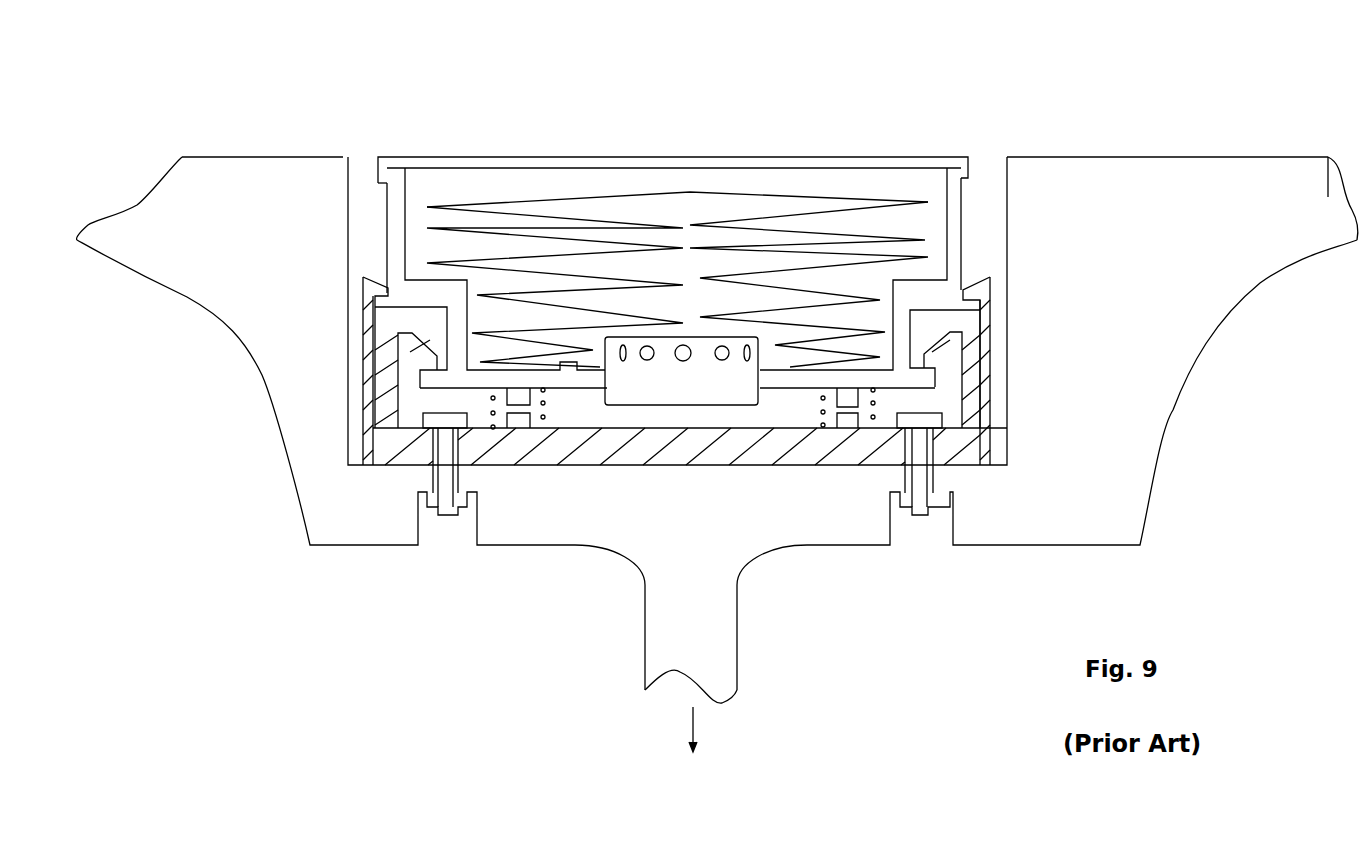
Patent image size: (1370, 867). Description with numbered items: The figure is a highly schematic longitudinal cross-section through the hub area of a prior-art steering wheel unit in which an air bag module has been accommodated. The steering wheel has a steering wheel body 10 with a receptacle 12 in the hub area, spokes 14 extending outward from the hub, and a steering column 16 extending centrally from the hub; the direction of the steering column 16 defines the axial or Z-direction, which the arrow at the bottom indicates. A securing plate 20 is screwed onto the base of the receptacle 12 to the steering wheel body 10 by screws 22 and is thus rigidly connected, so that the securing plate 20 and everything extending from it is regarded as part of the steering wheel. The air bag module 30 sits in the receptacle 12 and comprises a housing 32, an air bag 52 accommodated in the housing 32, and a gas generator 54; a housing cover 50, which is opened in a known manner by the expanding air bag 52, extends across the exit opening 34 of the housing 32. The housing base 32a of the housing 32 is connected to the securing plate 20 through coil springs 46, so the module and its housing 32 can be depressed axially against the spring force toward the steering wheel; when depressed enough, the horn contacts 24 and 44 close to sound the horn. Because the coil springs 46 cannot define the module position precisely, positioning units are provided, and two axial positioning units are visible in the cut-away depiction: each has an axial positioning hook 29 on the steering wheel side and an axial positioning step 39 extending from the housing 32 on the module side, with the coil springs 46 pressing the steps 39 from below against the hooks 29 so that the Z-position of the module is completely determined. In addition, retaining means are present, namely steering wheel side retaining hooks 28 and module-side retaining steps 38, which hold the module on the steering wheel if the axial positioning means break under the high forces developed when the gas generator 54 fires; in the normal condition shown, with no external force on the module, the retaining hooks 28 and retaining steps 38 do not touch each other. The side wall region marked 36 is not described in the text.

The steering wheel body 10 is at (1145, 378).
The receptacle 12 is at (988, 177).
The spokes 14 is at (128, 230).
The steering column 16 is at (713, 625).
The securing plate 20 is at (780, 450).
The screws 22 is at (448, 505).
The horn contact 24 is at (522, 420).
The retaining hooks 28 is at (406, 387).
The axial positioning hook 29 is at (373, 373).
The air bag module 30 is at (483, 180).
The housing 32 is at (910, 283).
The housing base 32a is at (795, 390).
The exit opening 34 is at (665, 175).
The side wall 36 is at (955, 213).
The retaining steps 38 is at (437, 378).
The axial positioning step 39 is at (382, 289).
The horn contact 44 is at (520, 400).
The coil springs 46 is at (493, 397).
The housing cover 50 is at (594, 165).
The air bag 52 is at (757, 212).
The gas generator 54 is at (640, 387).